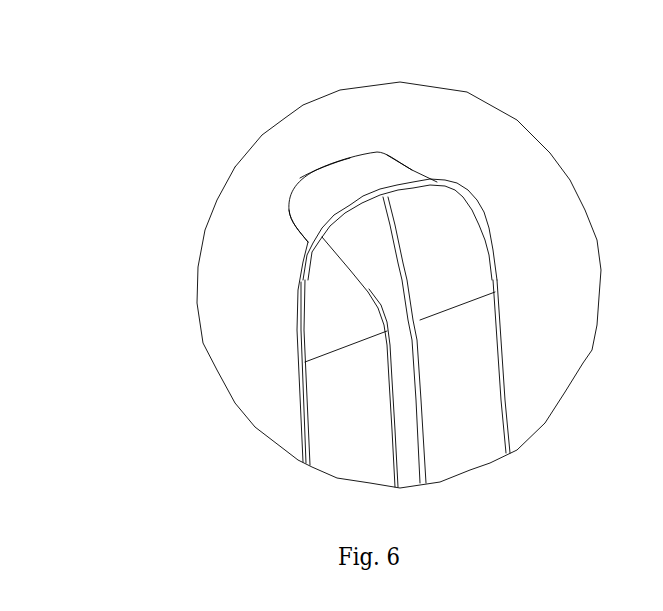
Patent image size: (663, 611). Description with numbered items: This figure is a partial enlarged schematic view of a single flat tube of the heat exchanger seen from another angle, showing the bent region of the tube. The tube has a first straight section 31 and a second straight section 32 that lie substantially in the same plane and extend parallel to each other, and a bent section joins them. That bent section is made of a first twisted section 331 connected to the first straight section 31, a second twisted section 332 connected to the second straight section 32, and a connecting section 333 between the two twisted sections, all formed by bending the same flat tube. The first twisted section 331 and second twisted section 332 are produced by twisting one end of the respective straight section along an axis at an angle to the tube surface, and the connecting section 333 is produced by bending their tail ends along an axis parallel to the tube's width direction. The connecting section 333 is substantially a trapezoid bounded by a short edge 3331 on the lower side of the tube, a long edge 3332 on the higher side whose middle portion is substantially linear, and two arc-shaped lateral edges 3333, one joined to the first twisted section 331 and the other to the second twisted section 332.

The first straight section 31 is at (402, 285).
The second straight section 32 is at (256, 369).
The first twisted section 331 is at (522, 299).
The second twisted section 332 is at (264, 346).
The connecting section 333 is at (366, 136).
The short edge 3331 is at (306, 118).
The long edge 3332 is at (461, 290).
The arc-shaped lateral edge 3333 is at (355, 153).